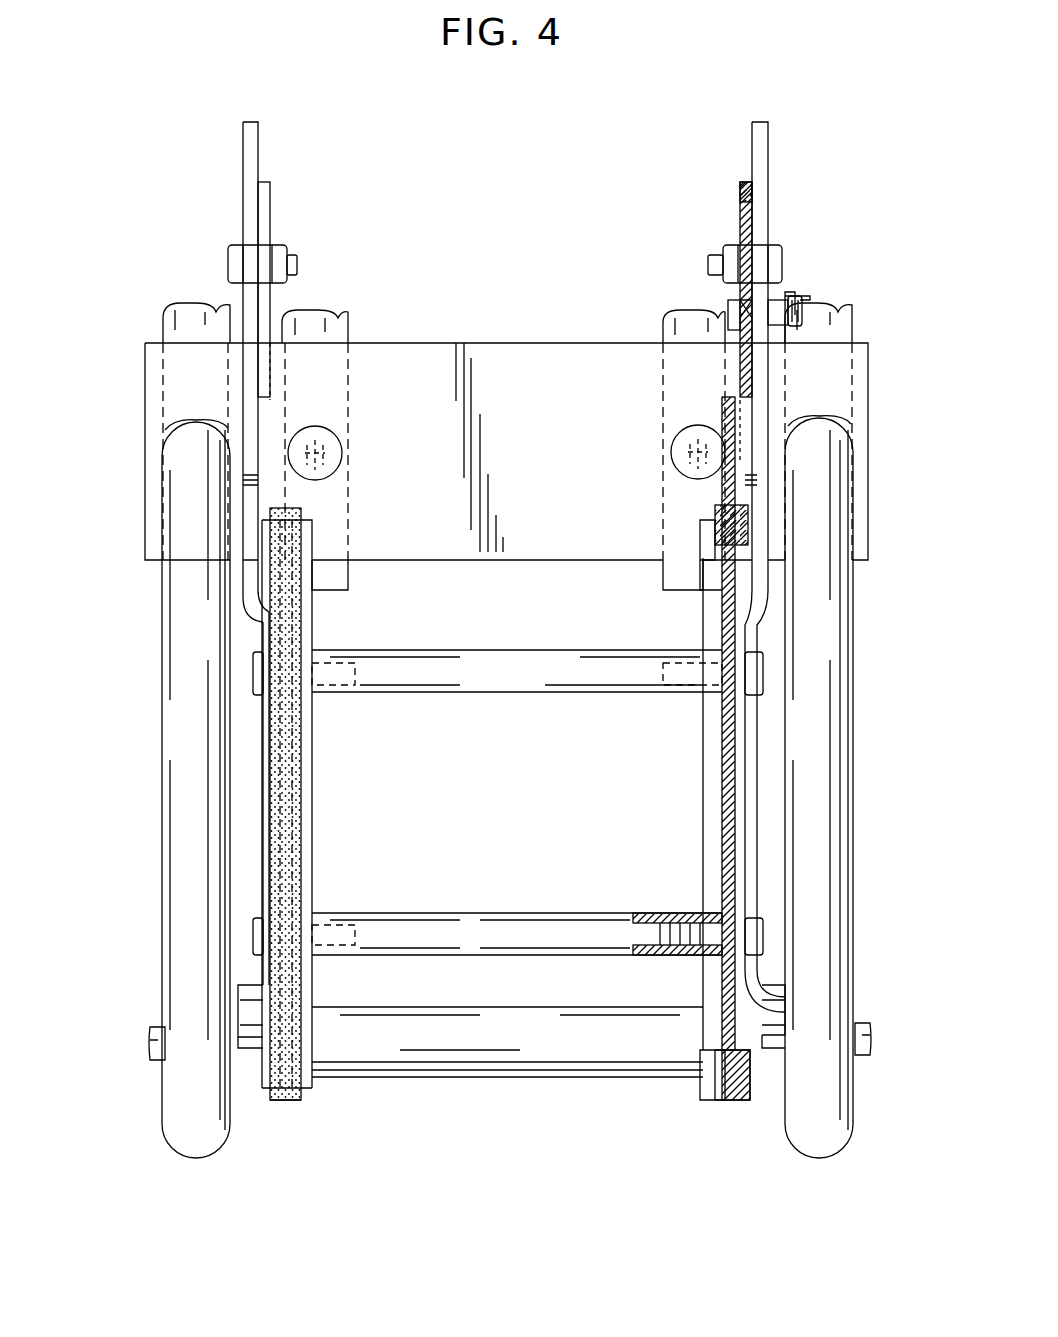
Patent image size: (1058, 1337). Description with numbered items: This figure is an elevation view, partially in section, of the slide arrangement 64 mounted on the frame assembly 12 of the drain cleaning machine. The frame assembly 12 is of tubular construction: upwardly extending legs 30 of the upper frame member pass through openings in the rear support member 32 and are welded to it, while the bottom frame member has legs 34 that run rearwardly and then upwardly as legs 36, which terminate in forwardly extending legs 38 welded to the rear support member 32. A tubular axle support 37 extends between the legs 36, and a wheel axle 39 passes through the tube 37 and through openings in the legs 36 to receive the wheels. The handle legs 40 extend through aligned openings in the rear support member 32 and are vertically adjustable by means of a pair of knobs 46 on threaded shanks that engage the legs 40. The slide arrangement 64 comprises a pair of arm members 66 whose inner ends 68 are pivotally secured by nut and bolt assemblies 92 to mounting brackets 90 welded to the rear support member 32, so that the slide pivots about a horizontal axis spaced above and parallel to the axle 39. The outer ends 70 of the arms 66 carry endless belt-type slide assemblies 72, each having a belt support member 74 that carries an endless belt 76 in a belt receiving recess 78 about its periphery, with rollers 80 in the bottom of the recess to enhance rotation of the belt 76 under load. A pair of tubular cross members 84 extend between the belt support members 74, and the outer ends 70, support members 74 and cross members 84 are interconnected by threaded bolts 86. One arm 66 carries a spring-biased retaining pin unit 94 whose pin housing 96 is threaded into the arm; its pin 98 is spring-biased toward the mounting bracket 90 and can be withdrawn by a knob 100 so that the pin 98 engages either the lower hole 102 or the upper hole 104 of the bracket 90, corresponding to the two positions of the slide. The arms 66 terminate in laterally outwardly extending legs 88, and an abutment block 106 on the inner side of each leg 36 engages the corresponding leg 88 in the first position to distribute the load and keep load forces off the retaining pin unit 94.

The frame assembly 12 is at (155, 612).
The upwardly extending legs 30 is at (175, 330).
The rear support member 32 is at (523, 366).
The legs 34 is at (210, 1160).
The legs 36 is at (183, 798).
The tubular axle support 37 is at (468, 1060).
The forwardly extending legs 38 is at (192, 420).
The wheel axle 39 is at (150, 1050).
The upwardly extending legs 40 is at (350, 322).
The knobs 46 is at (342, 453).
The slide arrangement 64 is at (316, 1130).
The arm members 66 is at (258, 415).
The inner ends 68 is at (250, 210).
The outer ends 70 is at (262, 848).
The endless belt-type slide assemblies 72 is at (300, 860).
The belt support members 74 is at (312, 802).
The endless belts 76 is at (303, 620).
The belt receiving recesses 78 is at (745, 530).
The rollers 80 is at (705, 565).
The tubular cross members 84 is at (580, 680).
The threaded bolts 86 is at (256, 672).
The laterally outwardly extending legs 88 is at (240, 1010).
The mounting brackets 90 is at (268, 214).
The nut and bolt assemblies 92 is at (230, 262).
The spring-biased retaining pin unit 94 is at (800, 292).
The pin housing 96 is at (782, 322).
The pin 98 is at (735, 322).
The knob 100 is at (805, 316).
The lower hole 102 is at (742, 312).
The upper hole 104 is at (740, 200).
The abutment block 106 is at (248, 1040).